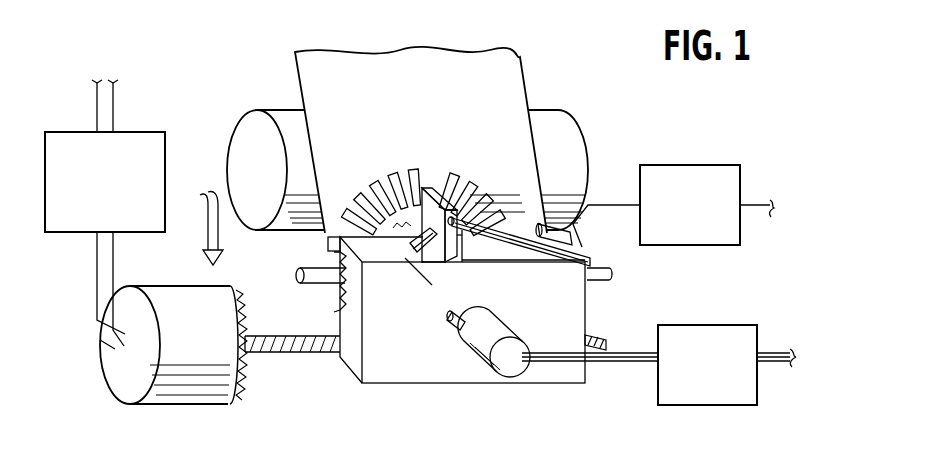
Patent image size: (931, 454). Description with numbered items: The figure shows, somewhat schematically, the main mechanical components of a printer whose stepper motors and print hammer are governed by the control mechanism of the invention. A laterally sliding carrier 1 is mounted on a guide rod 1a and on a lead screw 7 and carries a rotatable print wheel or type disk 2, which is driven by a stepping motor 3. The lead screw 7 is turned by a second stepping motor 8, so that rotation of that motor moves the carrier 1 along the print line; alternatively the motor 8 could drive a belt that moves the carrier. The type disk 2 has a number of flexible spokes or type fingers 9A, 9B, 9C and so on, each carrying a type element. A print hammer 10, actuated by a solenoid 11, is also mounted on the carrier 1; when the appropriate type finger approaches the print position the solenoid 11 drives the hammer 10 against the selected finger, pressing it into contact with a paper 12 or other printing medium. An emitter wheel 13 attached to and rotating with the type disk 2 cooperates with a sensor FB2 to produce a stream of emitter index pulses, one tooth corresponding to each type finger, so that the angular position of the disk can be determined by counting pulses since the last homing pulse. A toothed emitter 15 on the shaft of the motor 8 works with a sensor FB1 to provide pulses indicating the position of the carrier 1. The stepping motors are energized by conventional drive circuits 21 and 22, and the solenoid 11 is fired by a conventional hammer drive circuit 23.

The carrier 1 is at (384, 380).
The guide rod 1a is at (618, 272).
The print wheel 2 is at (434, 174).
The stepping motor 3 is at (482, 368).
The lead screw 7 is at (296, 353).
The stepping motor 8 is at (170, 397).
The type finger 9A is at (474, 184).
The type finger 9B is at (455, 174).
The type finger 9C is at (420, 168).
The print hammer 10 is at (510, 242).
The solenoid 11 is at (573, 231).
The paper 12 is at (437, 97).
The emitter wheel 13 is at (418, 228).
The toothed emitter 15 is at (236, 396).
The drive circuit 21 is at (145, 131).
The drive circuit 22 is at (757, 330).
The hammer drive circuit 23 is at (702, 165).
The sensor FB1 is at (210, 246).
The sensor FB2 is at (424, 252).